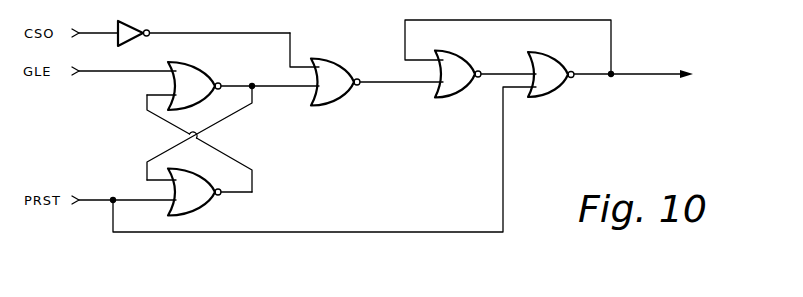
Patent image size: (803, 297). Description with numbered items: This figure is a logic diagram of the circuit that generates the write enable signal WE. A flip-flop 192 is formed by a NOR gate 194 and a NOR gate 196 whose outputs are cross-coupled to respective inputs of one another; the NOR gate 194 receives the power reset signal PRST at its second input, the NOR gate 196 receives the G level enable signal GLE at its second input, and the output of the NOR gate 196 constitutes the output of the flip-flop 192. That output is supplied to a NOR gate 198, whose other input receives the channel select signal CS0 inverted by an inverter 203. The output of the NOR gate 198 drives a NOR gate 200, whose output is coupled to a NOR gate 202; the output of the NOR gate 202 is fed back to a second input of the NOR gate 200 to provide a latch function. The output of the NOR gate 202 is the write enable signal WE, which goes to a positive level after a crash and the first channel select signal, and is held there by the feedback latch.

The flip-flop 192 is at (236, 141).
The NOR gate 194 is at (200, 200).
The NOR gate 196 is at (187, 79).
The NOR gate 198 is at (330, 88).
The NOR gate 200 is at (455, 84).
The NOR gate 202 is at (551, 80).
The inverter 203 is at (151, 37).